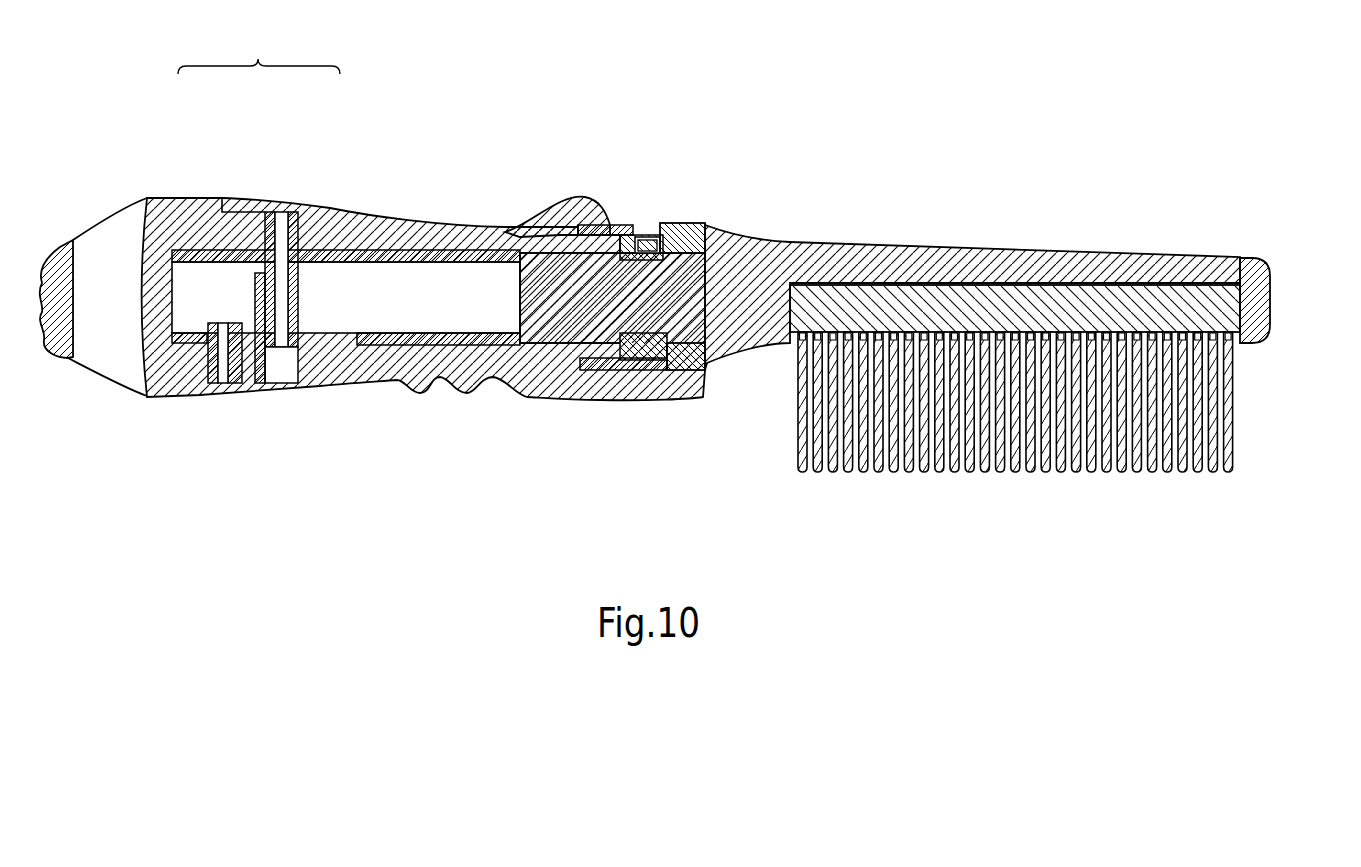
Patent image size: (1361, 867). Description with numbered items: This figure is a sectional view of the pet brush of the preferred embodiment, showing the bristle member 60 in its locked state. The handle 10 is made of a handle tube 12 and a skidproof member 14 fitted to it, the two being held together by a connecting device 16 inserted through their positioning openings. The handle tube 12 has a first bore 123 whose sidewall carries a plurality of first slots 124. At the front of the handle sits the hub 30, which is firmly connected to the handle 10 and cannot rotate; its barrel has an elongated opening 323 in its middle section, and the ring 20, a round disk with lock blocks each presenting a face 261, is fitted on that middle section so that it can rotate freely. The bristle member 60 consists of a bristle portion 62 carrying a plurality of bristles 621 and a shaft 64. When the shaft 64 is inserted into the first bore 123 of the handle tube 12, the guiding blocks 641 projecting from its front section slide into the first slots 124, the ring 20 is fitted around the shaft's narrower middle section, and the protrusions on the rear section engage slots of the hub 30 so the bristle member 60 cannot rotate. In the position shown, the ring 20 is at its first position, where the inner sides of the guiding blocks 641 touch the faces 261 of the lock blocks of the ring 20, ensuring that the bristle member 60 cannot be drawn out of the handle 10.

The handle 10 is at (259, 47).
The handle tube 12 is at (380, 258).
The skidproof member 14 is at (197, 200).
The connecting device 16 is at (283, 200).
The first slots 124 is at (505, 242).
The first bore 123 is at (450, 322).
The shaft 64 is at (557, 310).
The guiding blocks 641 is at (547, 240).
The face 261 is at (647, 228).
The elongated opening 323 is at (660, 228).
The hub 30 is at (697, 221).
The ring 20 is at (648, 360).
The bristle member 60 is at (1112, 237).
The bristle portion 62 is at (995, 290).
The bristles 621 is at (1228, 433).